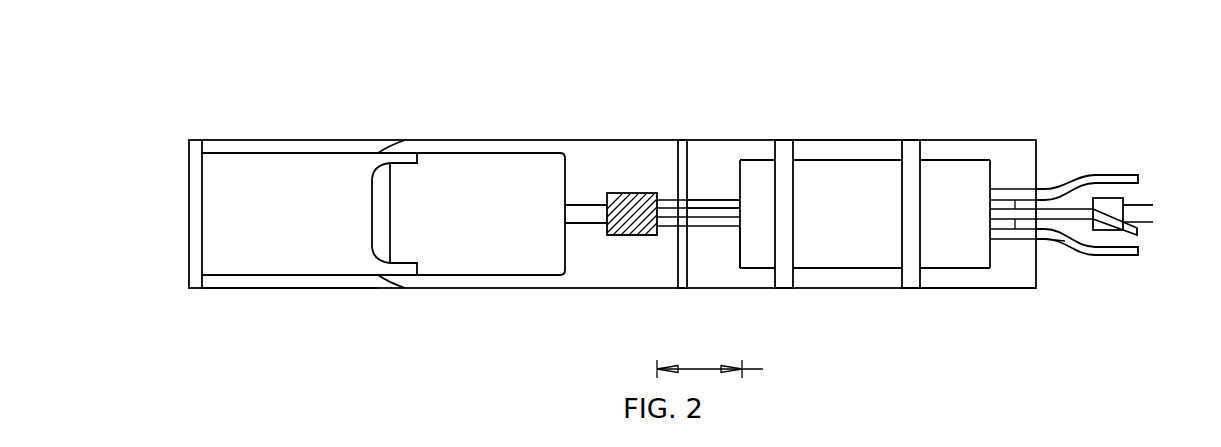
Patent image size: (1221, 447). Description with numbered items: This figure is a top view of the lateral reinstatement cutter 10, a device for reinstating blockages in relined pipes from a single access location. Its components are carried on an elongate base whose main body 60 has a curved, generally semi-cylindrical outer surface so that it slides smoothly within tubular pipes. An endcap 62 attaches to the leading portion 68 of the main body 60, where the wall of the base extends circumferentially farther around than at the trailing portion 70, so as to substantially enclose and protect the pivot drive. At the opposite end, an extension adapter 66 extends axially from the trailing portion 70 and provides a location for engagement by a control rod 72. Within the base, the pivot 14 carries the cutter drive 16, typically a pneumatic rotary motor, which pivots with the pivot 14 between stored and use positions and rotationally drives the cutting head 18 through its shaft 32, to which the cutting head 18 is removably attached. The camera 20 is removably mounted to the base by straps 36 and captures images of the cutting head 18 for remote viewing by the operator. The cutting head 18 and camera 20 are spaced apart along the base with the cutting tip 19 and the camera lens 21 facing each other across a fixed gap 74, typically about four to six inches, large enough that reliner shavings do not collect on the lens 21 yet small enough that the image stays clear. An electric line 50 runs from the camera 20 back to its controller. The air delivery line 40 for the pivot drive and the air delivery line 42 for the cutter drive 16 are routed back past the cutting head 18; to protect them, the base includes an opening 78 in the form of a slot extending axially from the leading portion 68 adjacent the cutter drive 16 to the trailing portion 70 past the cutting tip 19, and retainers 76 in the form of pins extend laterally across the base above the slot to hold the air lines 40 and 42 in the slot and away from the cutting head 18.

The lateral reinstatement cutter 10 is at (848, 78).
The pivot 14 is at (322, 160).
The cutter drive 16 is at (485, 136).
The cutting head 18 is at (638, 180).
The cutting tip 19 is at (660, 238).
The camera 20 is at (978, 146).
The lens 21 is at (738, 246).
The shaft 32 is at (583, 188).
The straps 36 is at (788, 126).
The air delivery line 40 is at (708, 230).
The air delivery line 42 is at (725, 210).
The electric line 50 is at (1107, 160).
The main body 60 is at (571, 306).
The endcap 62 is at (197, 125).
The extension adapter 66 is at (1074, 248).
The leading portion 68 is at (258, 290).
The trailing portion 70 is at (942, 289).
The control rod 72 is at (1151, 181).
The gap 74 is at (726, 369).
The retainers 76 is at (690, 288).
The opening 78 is at (703, 182).